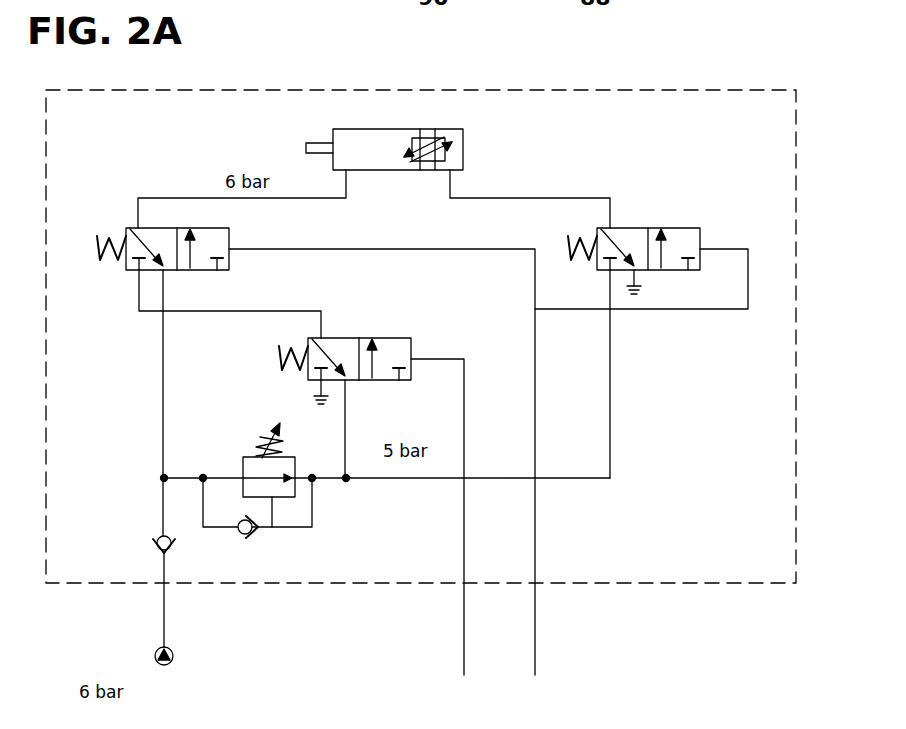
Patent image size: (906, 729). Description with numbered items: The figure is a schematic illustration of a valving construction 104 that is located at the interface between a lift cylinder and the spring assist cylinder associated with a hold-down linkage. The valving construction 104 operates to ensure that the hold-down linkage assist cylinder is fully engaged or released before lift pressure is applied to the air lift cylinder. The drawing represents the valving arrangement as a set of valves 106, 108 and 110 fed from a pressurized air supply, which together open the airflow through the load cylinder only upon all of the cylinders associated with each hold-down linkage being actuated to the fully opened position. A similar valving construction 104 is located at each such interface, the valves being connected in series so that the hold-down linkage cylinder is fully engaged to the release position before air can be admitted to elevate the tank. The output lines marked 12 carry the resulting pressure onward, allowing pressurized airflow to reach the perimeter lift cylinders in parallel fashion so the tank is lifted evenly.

The valving construction 104 is at (389, 170).
The valve 106 is at (160, 228).
The valve 108 is at (640, 227).
The valve 110 is at (352, 338).
The pressure output line 12 is at (488, 453).